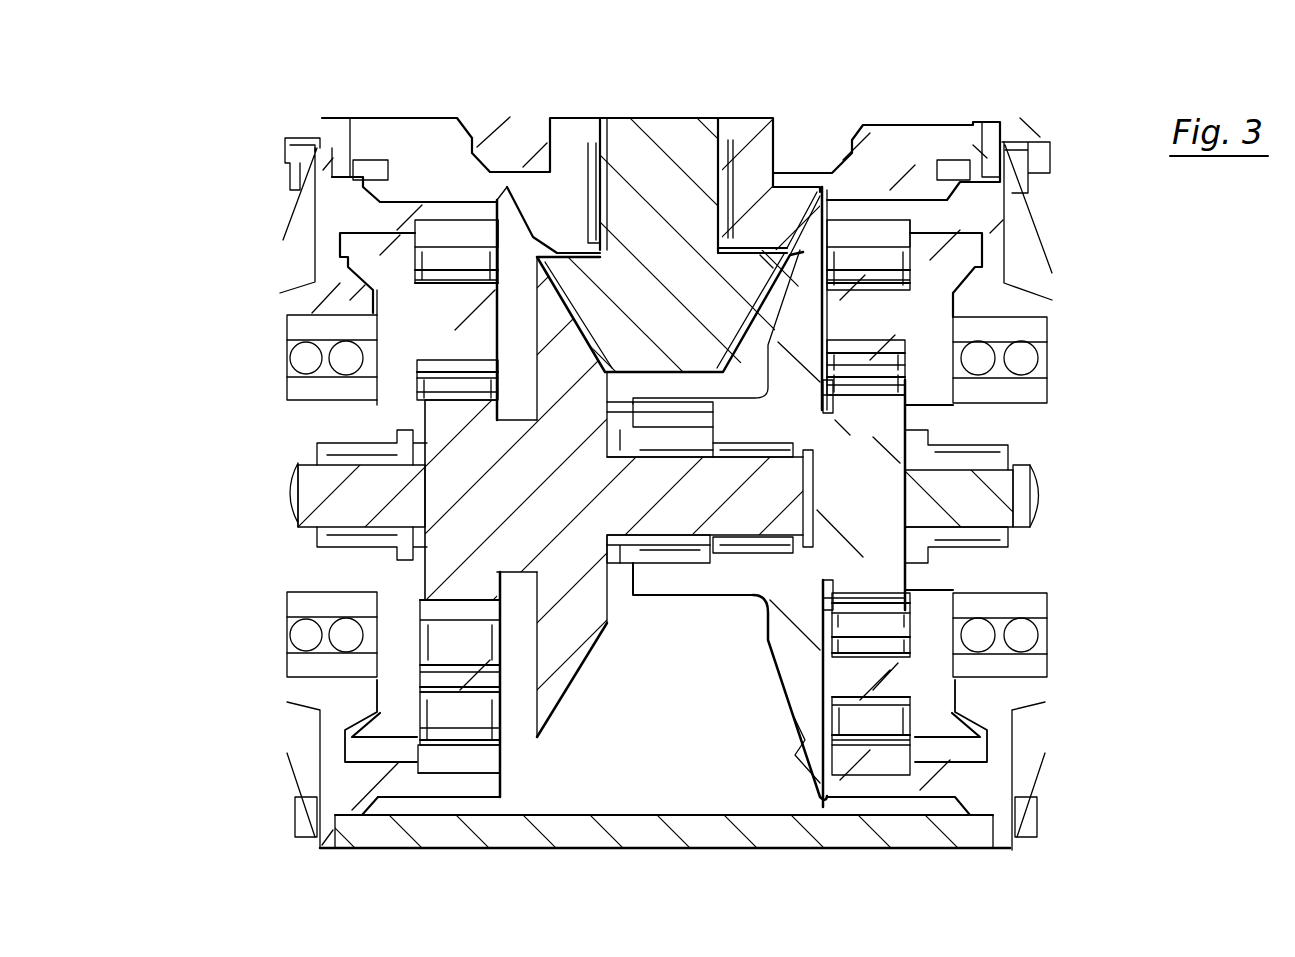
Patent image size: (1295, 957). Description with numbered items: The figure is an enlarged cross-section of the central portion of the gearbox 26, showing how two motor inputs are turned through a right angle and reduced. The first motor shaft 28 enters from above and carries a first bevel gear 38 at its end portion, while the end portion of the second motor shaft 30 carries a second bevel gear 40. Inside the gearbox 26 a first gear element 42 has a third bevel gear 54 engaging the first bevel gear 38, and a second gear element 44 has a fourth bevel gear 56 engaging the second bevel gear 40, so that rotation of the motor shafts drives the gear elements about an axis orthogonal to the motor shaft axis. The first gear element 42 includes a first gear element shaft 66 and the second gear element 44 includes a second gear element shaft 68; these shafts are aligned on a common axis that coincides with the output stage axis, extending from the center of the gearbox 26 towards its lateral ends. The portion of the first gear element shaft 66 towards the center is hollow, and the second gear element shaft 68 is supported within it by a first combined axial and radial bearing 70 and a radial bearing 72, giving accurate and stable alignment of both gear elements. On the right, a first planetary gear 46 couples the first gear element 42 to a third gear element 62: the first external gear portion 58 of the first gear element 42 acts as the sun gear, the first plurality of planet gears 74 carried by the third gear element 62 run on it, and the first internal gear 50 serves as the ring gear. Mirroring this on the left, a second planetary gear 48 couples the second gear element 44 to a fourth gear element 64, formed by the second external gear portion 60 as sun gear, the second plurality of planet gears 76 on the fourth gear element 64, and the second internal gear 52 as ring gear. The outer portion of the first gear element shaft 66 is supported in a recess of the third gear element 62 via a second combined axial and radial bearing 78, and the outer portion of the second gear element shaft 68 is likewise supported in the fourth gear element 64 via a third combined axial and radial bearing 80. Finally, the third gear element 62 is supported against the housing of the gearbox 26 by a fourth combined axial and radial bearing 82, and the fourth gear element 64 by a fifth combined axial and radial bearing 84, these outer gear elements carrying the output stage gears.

The gearbox 26 is at (127, 362).
The first motor shaft 28 is at (766, 177).
The second motor shaft 30 is at (669, 199).
The first bevel gear 38 is at (789, 228).
The second bevel gear 40 is at (612, 341).
The first gear element 42 is at (794, 430).
The second gear element 44 is at (572, 423).
The first planetary gear 46 is at (893, 178).
The second planetary gear 48 is at (431, 176).
The first internal gear 50 is at (869, 249).
The second internal gear 52 is at (454, 246).
The third bevel gear 54 is at (816, 241).
The fourth bevel gear 56 is at (561, 326).
The first external gear portion 58 is at (900, 463).
The second external gear portion 60 is at (487, 407).
The third gear element 62 is at (1010, 455).
The fourth gear element 64 is at (312, 452).
The first gear element shaft 66 is at (984, 506).
The second gear element shaft 68 is at (377, 506).
The first combined axial and radial bearing 70 is at (705, 563).
The radial bearing 72 is at (795, 553).
The first plurality of planet gears 74 is at (884, 335).
The second plurality of planet gears 76 is at (464, 338).
The second combined axial and radial bearing 78 is at (975, 553).
The third combined axial and radial bearing 80 is at (405, 553).
The fourth combined axial and radial bearing 82 is at (1015, 593).
The fifth combined axial and radial bearing 84 is at (300, 580).